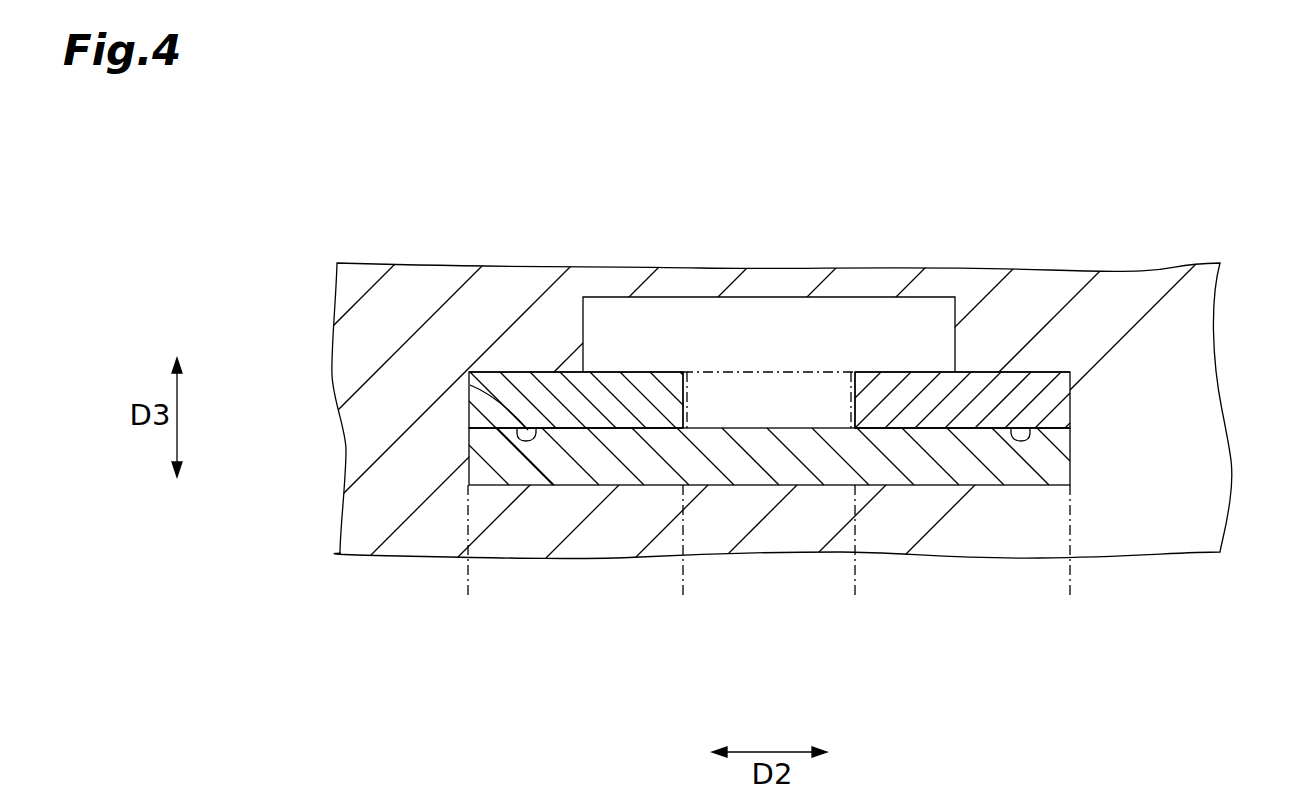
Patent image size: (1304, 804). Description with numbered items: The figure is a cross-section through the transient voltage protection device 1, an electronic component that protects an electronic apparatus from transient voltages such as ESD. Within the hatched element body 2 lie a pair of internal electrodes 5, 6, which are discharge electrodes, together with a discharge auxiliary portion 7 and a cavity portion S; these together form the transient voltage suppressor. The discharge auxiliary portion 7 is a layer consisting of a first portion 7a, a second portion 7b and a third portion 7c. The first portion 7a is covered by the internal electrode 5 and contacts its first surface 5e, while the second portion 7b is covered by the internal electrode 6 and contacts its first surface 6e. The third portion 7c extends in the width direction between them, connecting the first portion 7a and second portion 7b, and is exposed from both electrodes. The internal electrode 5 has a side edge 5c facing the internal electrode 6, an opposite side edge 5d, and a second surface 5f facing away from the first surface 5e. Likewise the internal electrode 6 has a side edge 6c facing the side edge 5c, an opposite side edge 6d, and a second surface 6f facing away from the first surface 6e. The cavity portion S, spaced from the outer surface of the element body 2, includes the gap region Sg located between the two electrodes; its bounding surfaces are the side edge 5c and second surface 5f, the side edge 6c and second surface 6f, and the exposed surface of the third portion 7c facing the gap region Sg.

The transient voltage protection device 1 is at (1243, 172).
The element body 2 is at (1132, 280).
The internal electrode 5 is at (468, 371).
The side edge 5c is at (687, 393).
The side edge 5d is at (467, 413).
The first surface 5e is at (517, 428).
The second surface 5f is at (548, 371).
The internal electrode 6 is at (1057, 390).
The side edge 6c is at (852, 393).
The side edge 6d is at (1070, 416).
The first surface 6e is at (1030, 428).
The second surface 6f is at (967, 371).
The discharge auxiliary portion 7 is at (1060, 458).
The first portion 7a is at (683, 594).
The second portion 7b is at (1070, 594).
The third portion 7c is at (683, 594).
The cavity portion S is at (921, 343).
The gap region Sg is at (790, 415).